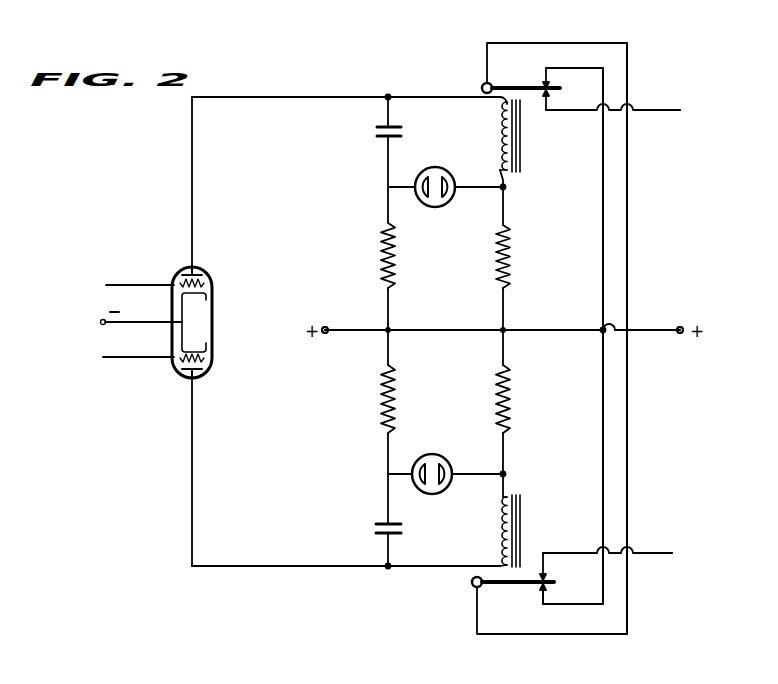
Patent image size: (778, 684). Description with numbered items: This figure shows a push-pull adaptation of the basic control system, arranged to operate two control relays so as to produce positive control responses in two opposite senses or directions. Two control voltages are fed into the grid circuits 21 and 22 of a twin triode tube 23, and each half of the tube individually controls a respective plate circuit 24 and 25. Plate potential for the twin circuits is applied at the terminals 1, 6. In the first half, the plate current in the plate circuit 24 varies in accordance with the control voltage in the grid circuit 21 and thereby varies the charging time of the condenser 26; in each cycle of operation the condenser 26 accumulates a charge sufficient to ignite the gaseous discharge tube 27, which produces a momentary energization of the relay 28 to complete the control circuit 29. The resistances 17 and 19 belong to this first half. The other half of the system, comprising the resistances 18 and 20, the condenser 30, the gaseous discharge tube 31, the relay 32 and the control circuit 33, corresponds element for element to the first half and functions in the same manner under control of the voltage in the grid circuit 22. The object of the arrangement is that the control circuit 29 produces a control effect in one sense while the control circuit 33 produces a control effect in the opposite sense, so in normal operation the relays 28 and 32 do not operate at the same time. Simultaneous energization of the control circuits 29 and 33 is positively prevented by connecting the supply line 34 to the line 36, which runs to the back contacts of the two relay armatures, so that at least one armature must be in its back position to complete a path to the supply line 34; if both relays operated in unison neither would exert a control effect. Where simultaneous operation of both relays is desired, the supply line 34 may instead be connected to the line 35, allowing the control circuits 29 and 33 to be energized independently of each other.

The plate potential terminal 1 is at (352, 327).
The plate potential terminal 6 is at (124, 323).
The resistance 17 is at (497, 265).
The resistance 18 is at (494, 402).
The resistance 19 is at (380, 265).
The resistance 20 is at (379, 400).
The control voltage grid circuit 21 is at (150, 272).
The control voltage grid circuit 22 is at (134, 361).
The twin triode tube 23 is at (212, 308).
The plate circuit 24 is at (192, 233).
The plate circuit 25 is at (192, 423).
The condenser 26 is at (400, 133).
The gaseous discharge tube 27 is at (456, 158).
The relay 28 is at (520, 155).
The control circuit 29 is at (679, 108).
The condenser 30 is at (384, 523).
The gaseous discharge tube 31 is at (454, 446).
The relay 32 is at (520, 515).
The control circuit 33 is at (672, 550).
The supply line 34 is at (652, 333).
The line 35 is at (627, 282).
The line 36 is at (603, 281).